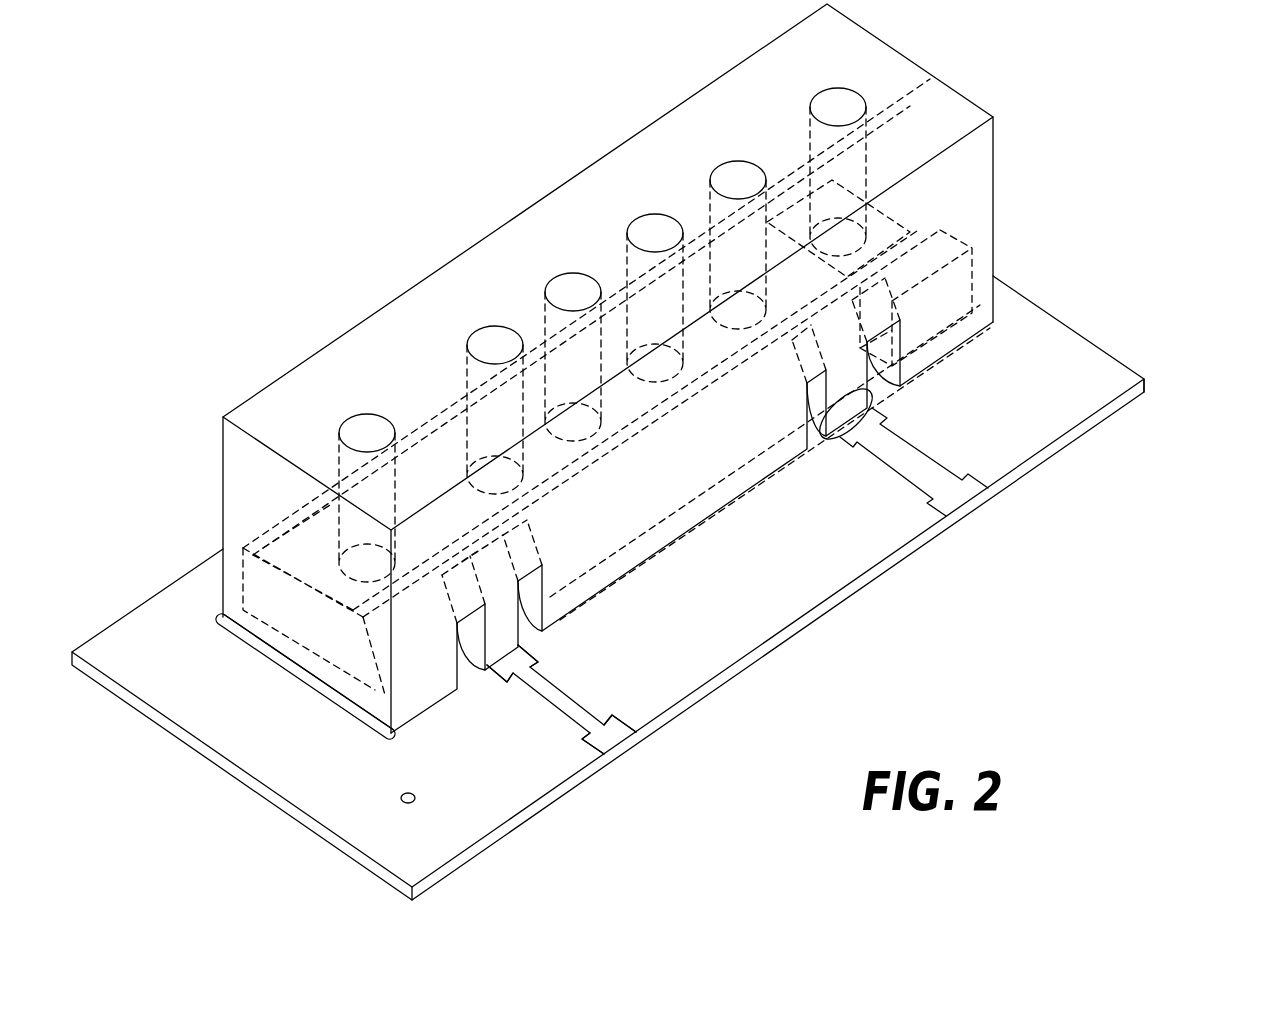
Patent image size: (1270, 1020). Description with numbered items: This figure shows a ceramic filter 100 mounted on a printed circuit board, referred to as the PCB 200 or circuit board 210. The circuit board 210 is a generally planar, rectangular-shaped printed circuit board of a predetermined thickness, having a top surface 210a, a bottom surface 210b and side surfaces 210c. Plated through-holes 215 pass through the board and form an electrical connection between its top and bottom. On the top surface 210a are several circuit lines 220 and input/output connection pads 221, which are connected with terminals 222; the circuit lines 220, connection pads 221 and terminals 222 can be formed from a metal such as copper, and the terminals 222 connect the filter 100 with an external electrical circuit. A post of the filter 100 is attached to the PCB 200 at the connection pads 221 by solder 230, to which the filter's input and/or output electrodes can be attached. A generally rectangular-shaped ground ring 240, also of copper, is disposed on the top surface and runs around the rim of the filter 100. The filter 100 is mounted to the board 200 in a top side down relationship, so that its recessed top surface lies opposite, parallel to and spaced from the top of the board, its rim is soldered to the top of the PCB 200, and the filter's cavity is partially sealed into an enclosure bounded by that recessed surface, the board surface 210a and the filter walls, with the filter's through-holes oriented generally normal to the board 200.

The printed circuit board 200 is at (345, 165).
The filter 100 is at (345, 333).
The circuit board 210 is at (1082, 336).
The top surface 210a is at (715, 573).
The bottom surface 210b is at (1105, 421).
The side surfaces 210c is at (898, 557).
The plated through-holes 215 is at (411, 805).
The circuit lines 220 is at (580, 697).
The input/output connection pads 221 is at (518, 645).
The terminals 222 is at (610, 720).
The solder 230 is at (853, 415).
The ground ring 240 is at (240, 652).